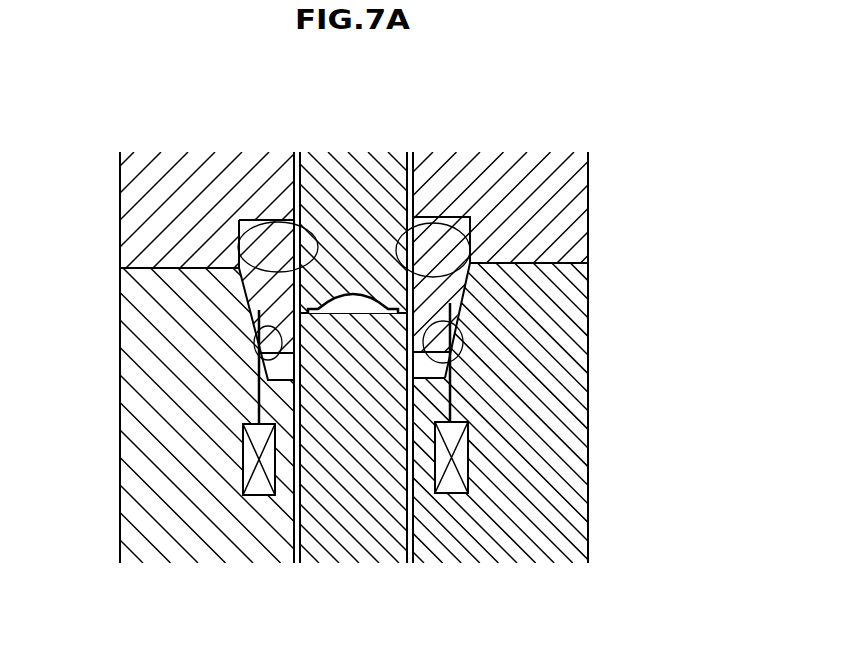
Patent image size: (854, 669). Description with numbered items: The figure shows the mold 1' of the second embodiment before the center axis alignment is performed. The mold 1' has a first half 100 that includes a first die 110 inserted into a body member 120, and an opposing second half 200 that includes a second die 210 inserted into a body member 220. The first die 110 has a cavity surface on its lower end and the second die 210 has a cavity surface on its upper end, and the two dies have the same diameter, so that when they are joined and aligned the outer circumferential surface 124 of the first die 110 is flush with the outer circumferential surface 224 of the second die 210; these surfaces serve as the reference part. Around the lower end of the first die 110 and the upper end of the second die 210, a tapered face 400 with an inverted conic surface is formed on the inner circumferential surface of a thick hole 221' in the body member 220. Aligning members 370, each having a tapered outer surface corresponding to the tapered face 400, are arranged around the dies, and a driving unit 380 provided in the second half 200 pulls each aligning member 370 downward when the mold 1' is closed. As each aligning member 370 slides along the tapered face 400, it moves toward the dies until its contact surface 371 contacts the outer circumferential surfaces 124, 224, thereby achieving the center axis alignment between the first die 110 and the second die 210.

The mold 1' is at (647, 357).
The first half 100 is at (596, 167).
The first die 110 is at (363, 168).
The body member 120 is at (205, 168).
The outer circumferential surface 124 is at (413, 172).
The second half 200 is at (599, 521).
The second die 210 is at (372, 563).
The body member 220 is at (230, 563).
The thick hole 221' is at (255, 363).
The outer circumferential surface 224 is at (413, 521).
The aligning member 370 is at (277, 293).
The contact surface 371 is at (268, 224).
The driving unit 380 is at (243, 470).
The tapered face 400 is at (428, 328).